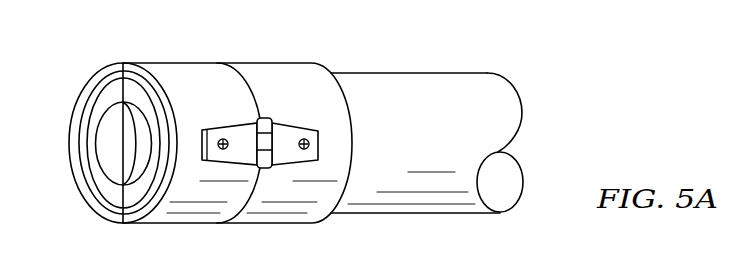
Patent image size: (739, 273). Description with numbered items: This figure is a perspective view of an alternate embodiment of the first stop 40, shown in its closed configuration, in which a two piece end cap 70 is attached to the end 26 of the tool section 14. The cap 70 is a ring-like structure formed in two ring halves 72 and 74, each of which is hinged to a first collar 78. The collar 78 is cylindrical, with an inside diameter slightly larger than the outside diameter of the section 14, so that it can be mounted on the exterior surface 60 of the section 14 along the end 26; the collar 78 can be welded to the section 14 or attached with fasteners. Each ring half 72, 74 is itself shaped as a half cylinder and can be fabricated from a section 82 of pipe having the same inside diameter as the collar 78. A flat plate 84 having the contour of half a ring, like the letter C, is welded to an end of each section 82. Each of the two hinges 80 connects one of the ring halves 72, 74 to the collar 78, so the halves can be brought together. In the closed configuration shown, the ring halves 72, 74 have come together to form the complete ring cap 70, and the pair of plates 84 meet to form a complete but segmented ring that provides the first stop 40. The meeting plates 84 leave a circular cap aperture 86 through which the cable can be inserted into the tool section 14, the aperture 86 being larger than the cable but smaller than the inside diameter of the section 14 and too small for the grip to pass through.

The section 14 is at (380, 73).
The end 26 is at (362, 152).
The first stop 40 is at (162, 56).
The exterior surface 60 is at (458, 73).
The two piece end cap 70 is at (232, 56).
The ring half 72 is at (108, 95).
The ring half 74 is at (195, 208).
The first collar 78 is at (280, 208).
The hinge 80 is at (283, 152).
The section of pipe 82 is at (77, 158).
The flat plate 84 is at (147, 188).
The aperture 86 is at (137, 146).